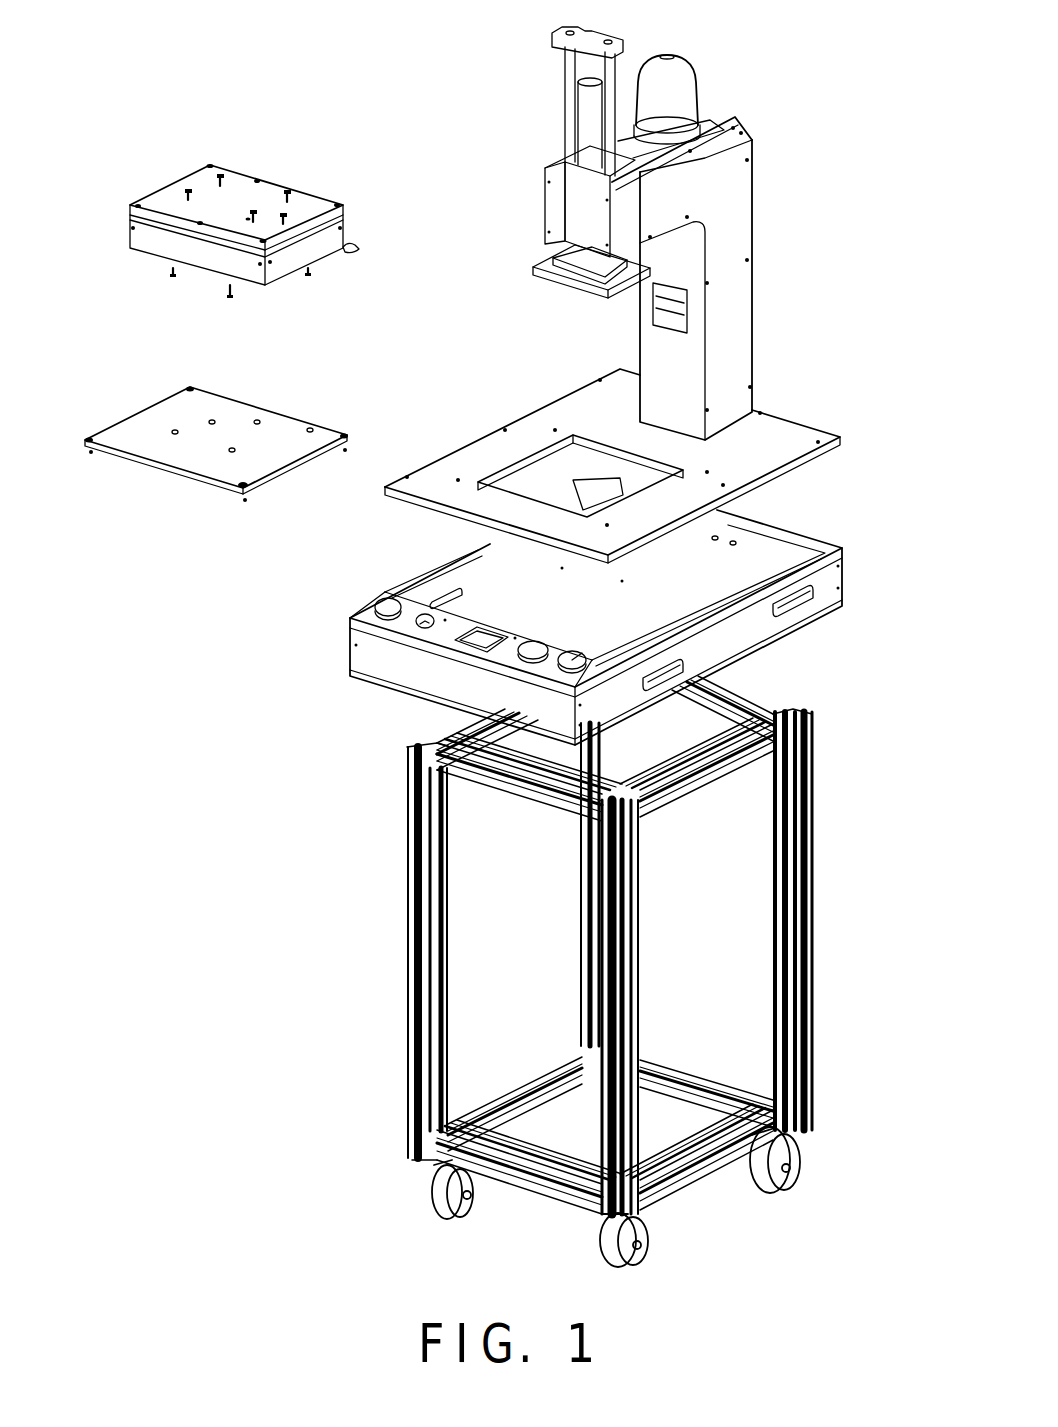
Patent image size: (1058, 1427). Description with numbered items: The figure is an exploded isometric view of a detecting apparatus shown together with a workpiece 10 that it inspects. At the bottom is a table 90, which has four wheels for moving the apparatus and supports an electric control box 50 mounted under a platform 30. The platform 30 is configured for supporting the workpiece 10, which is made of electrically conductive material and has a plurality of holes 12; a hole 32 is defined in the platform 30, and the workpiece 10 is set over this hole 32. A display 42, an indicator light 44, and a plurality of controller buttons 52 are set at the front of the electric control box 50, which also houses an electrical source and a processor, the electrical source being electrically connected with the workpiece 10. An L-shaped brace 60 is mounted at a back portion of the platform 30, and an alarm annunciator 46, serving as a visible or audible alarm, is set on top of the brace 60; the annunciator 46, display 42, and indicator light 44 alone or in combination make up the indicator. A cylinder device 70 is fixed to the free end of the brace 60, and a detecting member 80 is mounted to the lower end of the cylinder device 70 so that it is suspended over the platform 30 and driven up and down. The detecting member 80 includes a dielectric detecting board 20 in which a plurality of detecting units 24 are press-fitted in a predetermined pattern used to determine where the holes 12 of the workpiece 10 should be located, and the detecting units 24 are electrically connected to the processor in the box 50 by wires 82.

The workpiece 10 is at (110, 417).
The holes 12 is at (259, 420).
The detecting board 20 is at (143, 247).
The detecting units 24 is at (232, 292).
The platform 30 is at (776, 436).
The hole 32 is at (552, 468).
The display 42 is at (478, 640).
The indicator light 44 is at (424, 628).
The alarm annunciator 46 is at (680, 58).
The electric control box 50 is at (851, 560).
The controller buttons 52 is at (582, 652).
The L-shaped brace 60 is at (752, 215).
The cylinder device 70 is at (546, 186).
The detecting member 80 is at (168, 182).
The wires 82 is at (355, 252).
The table 90 is at (812, 916).